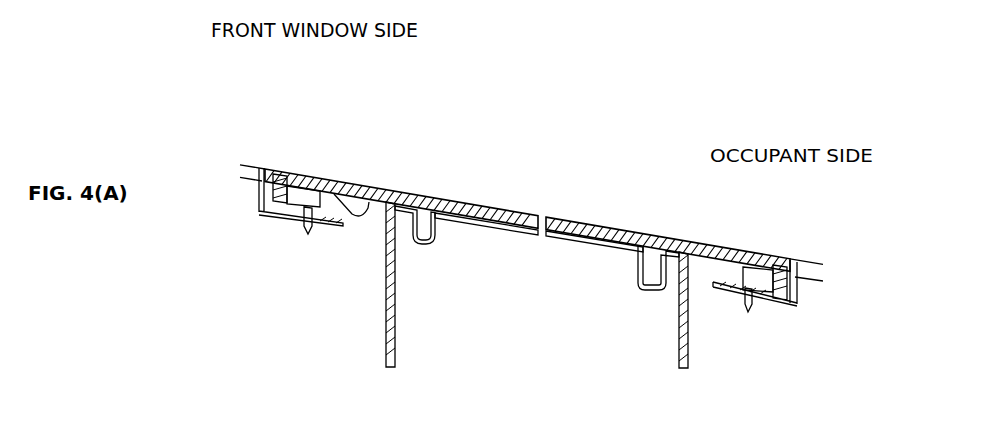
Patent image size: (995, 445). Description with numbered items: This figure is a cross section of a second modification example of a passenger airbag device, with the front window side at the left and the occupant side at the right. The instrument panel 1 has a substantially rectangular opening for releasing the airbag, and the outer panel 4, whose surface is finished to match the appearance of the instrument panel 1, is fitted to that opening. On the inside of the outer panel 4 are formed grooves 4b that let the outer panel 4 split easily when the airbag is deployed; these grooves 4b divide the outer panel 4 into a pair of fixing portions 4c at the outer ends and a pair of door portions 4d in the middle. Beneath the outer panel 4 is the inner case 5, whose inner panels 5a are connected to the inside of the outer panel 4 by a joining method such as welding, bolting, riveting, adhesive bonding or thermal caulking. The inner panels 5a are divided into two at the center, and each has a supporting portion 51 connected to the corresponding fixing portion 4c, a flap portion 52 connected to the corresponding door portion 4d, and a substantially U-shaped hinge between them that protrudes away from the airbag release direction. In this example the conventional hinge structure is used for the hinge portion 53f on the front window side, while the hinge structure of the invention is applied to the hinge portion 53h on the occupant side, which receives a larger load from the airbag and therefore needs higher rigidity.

The instrument panel 1 is at (253, 163).
The outer panel 4 is at (372, 175).
The grooves 4b is at (413, 193).
The fixing portions 4c is at (298, 170).
The door portions 4d is at (493, 205).
The inner case 5 is at (365, 263).
The inner panels 5a is at (498, 232).
The supporting portion 51 is at (328, 170).
The flap portion 52 is at (447, 198).
The hinge portion on the front window side 53f is at (413, 242).
The hinge portion on the occupant side 53h is at (660, 280).